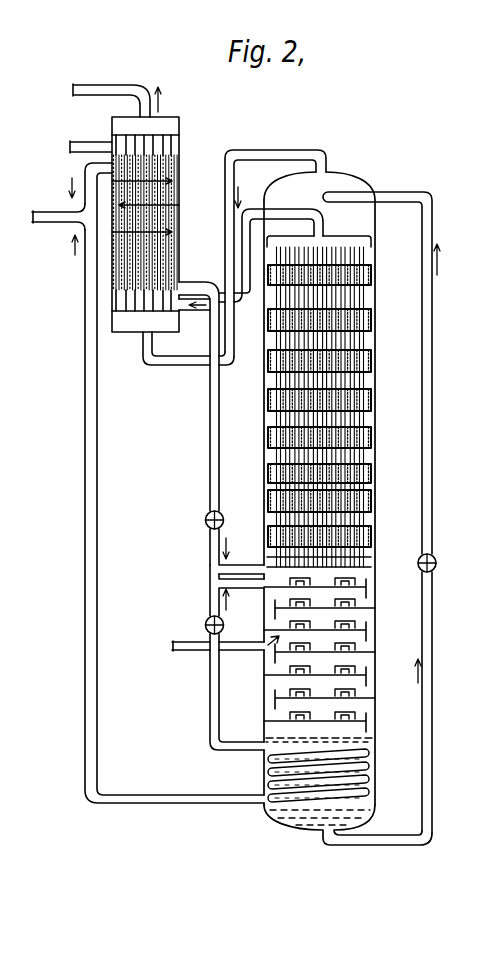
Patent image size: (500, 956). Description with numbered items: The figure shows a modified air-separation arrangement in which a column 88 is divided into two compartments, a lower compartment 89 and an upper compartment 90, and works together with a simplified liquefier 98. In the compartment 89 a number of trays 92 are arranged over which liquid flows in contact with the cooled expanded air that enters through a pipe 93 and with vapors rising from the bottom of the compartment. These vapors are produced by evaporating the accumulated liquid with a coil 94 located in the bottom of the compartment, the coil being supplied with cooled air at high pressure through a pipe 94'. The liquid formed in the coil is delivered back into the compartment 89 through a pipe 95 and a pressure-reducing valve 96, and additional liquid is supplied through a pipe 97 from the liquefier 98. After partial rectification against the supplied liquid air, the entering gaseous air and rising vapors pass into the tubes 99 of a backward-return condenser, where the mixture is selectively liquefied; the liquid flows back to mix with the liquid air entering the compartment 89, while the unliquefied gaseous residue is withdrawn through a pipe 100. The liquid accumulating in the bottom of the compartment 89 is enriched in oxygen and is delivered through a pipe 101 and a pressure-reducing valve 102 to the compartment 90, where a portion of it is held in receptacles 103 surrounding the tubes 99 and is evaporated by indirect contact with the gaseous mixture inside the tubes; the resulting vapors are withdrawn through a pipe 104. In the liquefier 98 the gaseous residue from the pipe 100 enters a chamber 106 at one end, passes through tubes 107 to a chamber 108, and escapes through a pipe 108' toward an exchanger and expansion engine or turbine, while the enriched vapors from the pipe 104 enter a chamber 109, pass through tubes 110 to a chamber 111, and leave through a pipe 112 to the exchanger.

The column 88 is at (372, 475).
The compartment 89 is at (370, 708).
The compartment 90 is at (371, 390).
The trays 92 is at (360, 627).
The pipe 93 is at (245, 651).
The coil 94 is at (340, 781).
The pipe 94' is at (148, 497).
The pipe 95 is at (210, 707).
The pressure-reducing valve 96 is at (208, 623).
The pipe 97 is at (210, 492).
The liquefier 98 is at (166, 246).
The tubes 99 is at (368, 445).
The pipe 100 is at (248, 207).
The pipe 101 is at (433, 613).
The pressure-reducing valve 102 is at (437, 565).
The receptacles 103 is at (367, 268).
The pipe 104 is at (297, 148).
The chamber 106 is at (117, 302).
The tubes 107 is at (170, 193).
The chamber 108 is at (170, 138).
The pipe 108' is at (69, 157).
The chamber 109 is at (167, 323).
The tubes 110 is at (142, 304).
The chamber 111 is at (163, 122).
The pipe 112 is at (98, 92).